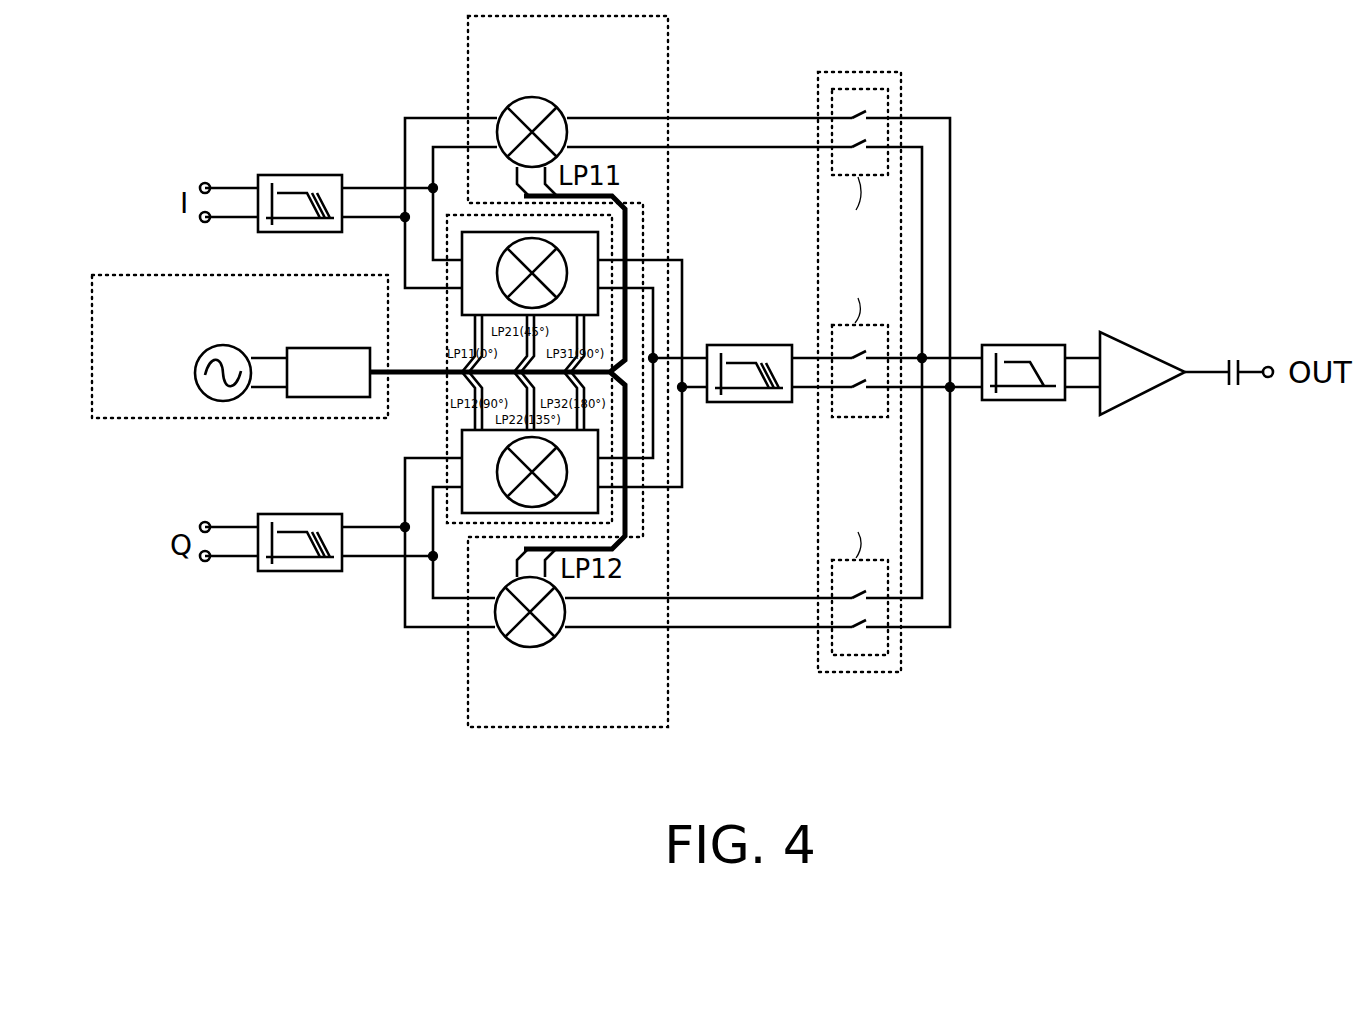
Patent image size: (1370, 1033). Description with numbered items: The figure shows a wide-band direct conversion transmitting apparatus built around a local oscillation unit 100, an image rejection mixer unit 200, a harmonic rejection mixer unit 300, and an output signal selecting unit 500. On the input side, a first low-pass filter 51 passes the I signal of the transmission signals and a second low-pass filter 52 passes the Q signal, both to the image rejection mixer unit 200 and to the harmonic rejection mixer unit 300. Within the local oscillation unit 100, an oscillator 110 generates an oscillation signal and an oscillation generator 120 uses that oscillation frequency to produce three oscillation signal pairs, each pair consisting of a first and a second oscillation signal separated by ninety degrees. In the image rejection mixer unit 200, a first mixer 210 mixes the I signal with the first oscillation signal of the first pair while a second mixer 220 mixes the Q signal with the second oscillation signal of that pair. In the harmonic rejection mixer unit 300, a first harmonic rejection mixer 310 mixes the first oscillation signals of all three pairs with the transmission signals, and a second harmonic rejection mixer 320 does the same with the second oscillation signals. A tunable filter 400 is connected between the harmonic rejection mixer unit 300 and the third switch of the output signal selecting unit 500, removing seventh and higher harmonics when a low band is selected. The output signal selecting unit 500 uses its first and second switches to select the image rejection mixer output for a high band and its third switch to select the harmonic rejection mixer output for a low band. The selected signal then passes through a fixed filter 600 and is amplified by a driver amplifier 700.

The first low-pass filter 51 is at (300, 175).
The second low-pass filter 52 is at (299, 572).
The local oscillation unit 100 is at (170, 420).
The oscillator 110 is at (217, 348).
The oscillation generator 120 is at (333, 348).
The image rejection mixer unit 200 is at (468, 67).
The first mixer 210 is at (532, 97).
The second mixer 220 is at (535, 647).
The harmonic rejection mixer unit 300 is at (447, 430).
The first harmonic rejection mixer 310 is at (462, 275).
The second harmonic rejection mixer 320 is at (462, 470).
The tunable filter 400 is at (750, 345).
The output signal selecting unit 500 is at (858, 673).
The fixed filter 600 is at (1020, 345).
The driver amplifier 700 is at (1130, 345).